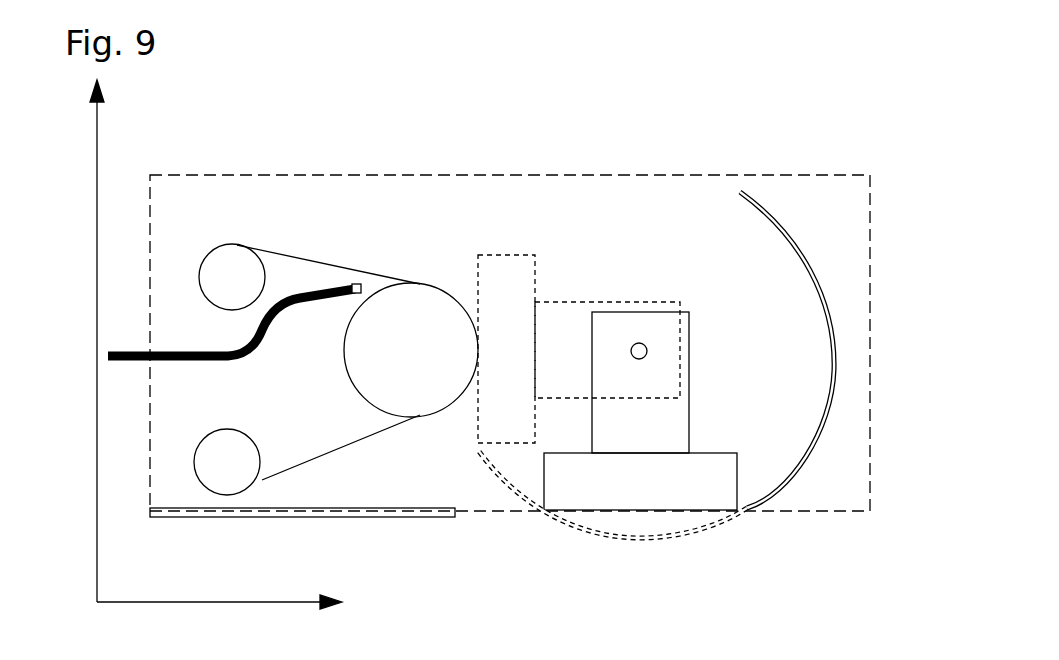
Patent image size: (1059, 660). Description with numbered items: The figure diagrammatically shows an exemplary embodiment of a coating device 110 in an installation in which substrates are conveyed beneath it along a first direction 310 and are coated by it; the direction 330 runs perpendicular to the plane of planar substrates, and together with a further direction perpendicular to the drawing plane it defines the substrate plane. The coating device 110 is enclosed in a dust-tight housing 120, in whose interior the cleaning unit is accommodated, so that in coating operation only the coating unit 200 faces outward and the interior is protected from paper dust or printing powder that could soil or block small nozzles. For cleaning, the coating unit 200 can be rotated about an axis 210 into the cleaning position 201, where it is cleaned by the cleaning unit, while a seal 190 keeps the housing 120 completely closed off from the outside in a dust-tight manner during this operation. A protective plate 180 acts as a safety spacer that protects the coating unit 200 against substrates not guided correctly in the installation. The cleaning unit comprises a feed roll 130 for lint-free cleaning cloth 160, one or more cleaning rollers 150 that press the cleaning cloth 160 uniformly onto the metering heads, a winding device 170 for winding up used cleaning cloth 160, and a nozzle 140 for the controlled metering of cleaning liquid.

The coating device 110 is at (498, 158).
The dust-tight housing 120 is at (640, 175).
The feed roll 130 is at (230, 278).
The nozzle for cleaning liquid 140 is at (360, 285).
The cleaning roller 150 is at (440, 342).
The cleaning cloth 160 is at (390, 430).
The winding device 170 is at (227, 462).
The protective plate 180 is at (260, 513).
The seal 190 is at (800, 245).
The coating unit in coating position 200 is at (690, 468).
The coating unit in cleaning position 201 is at (507, 357).
The axis of rotation 210 is at (640, 343).
The first direction 310 is at (100, 602).
The third direction 330 is at (97, 128).